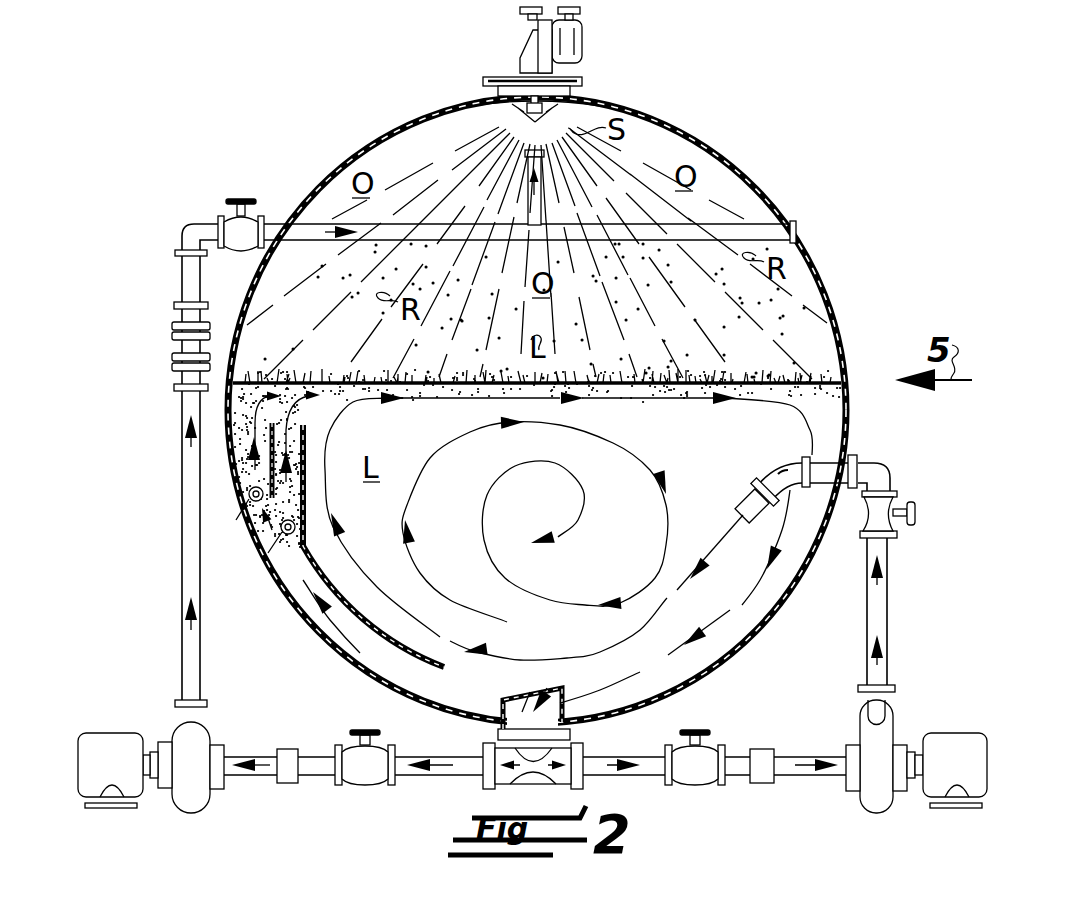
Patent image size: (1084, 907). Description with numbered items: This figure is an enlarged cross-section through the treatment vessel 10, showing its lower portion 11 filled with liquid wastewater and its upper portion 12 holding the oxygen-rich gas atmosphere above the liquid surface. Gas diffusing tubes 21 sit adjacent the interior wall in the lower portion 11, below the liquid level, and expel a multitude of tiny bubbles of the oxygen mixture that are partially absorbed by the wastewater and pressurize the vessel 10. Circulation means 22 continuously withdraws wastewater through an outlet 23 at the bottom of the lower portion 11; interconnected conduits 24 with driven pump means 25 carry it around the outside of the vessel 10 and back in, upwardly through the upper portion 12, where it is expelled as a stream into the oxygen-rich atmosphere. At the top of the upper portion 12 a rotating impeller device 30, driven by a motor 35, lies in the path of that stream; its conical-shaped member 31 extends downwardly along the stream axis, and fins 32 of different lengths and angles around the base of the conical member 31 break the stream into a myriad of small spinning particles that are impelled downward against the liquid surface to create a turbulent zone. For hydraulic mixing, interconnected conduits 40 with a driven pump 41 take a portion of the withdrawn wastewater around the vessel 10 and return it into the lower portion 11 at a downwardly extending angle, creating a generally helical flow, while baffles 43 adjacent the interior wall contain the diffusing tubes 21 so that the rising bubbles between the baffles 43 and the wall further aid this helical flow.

The treatment vessel 10 is at (160, 559).
The lower portion 11 is at (462, 510).
The upper portion 12 is at (419, 180).
The gas diffusing tubes 21 is at (252, 500).
The circulation means 22 is at (406, 785).
The outlet 23 is at (534, 693).
The interconnected conduits 24 is at (375, 232).
The pump means 25 is at (194, 800).
The rotating impeller device 30 is at (604, 96).
The conical-shaped member 31 is at (520, 136).
The fins 32 is at (490, 100).
The motor 35 is at (583, 50).
The interconnected conduits 40 is at (883, 612).
The pump 41 is at (878, 804).
The baffles 43 is at (302, 430).